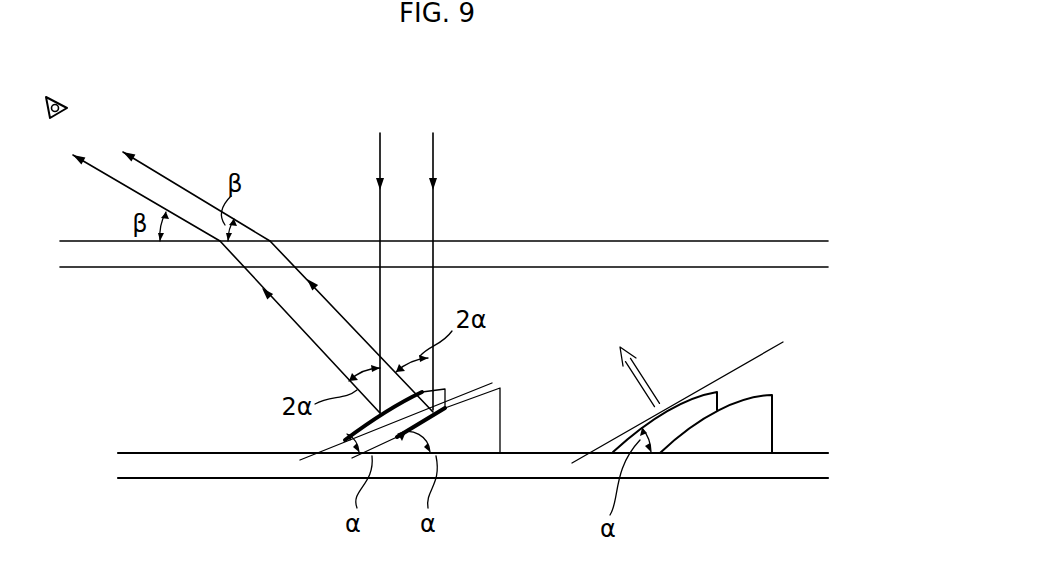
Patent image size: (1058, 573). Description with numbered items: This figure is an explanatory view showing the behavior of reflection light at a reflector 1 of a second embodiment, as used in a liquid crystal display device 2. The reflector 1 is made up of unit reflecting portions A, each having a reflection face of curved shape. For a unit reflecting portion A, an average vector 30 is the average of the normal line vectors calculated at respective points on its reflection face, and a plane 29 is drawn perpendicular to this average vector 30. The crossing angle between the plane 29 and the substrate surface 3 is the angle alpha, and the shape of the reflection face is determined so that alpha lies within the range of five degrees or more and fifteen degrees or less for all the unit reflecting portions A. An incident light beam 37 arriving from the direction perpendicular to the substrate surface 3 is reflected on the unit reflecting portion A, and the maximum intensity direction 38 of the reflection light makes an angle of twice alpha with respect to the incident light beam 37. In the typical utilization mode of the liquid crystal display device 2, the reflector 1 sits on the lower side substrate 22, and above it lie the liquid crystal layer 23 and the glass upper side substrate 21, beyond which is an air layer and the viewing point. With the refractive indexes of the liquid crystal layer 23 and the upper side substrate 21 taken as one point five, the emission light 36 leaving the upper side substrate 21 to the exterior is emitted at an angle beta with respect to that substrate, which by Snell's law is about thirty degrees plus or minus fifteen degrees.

The reflector 1 is at (755, 410).
The liquid crystal display device 2 is at (575, 155).
The substrate surface 3 is at (790, 452).
The upper side substrate 21 is at (592, 259).
The lower side substrate 22 is at (784, 466).
The liquid crystal layer 23 is at (663, 303).
The plane 29 is at (765, 352).
The average vector 30 is at (645, 365).
The emission light 36 is at (96, 162).
The incident light beam 37 is at (434, 222).
The maximum intensity direction of reflection light 38 is at (322, 300).
The unit reflecting portion A is at (685, 422).